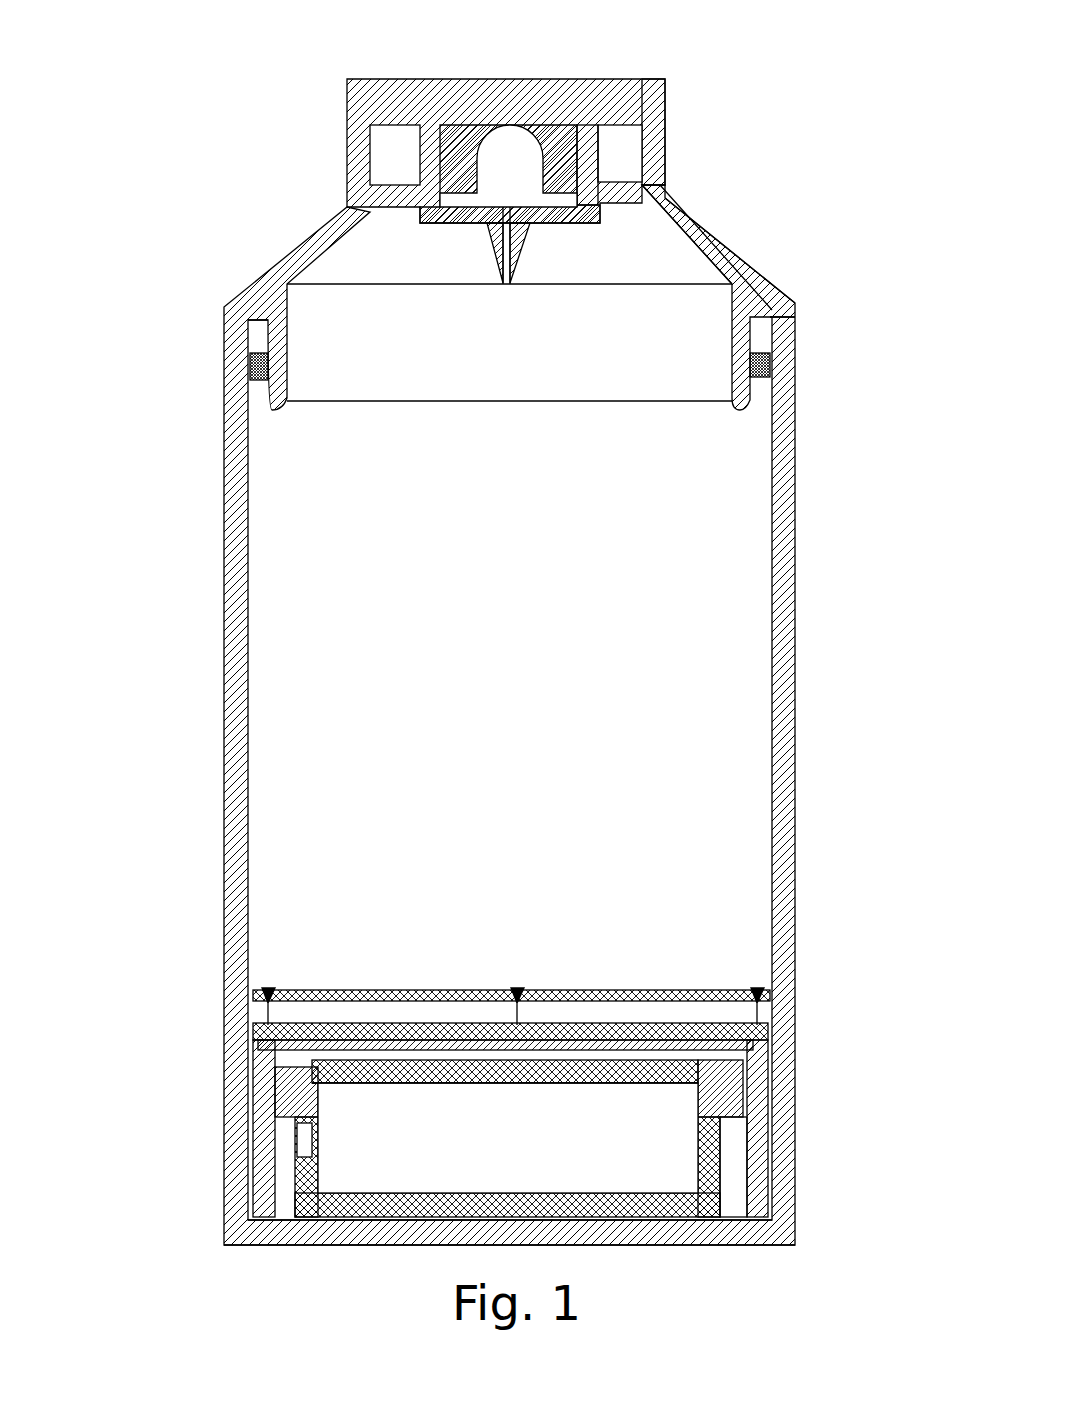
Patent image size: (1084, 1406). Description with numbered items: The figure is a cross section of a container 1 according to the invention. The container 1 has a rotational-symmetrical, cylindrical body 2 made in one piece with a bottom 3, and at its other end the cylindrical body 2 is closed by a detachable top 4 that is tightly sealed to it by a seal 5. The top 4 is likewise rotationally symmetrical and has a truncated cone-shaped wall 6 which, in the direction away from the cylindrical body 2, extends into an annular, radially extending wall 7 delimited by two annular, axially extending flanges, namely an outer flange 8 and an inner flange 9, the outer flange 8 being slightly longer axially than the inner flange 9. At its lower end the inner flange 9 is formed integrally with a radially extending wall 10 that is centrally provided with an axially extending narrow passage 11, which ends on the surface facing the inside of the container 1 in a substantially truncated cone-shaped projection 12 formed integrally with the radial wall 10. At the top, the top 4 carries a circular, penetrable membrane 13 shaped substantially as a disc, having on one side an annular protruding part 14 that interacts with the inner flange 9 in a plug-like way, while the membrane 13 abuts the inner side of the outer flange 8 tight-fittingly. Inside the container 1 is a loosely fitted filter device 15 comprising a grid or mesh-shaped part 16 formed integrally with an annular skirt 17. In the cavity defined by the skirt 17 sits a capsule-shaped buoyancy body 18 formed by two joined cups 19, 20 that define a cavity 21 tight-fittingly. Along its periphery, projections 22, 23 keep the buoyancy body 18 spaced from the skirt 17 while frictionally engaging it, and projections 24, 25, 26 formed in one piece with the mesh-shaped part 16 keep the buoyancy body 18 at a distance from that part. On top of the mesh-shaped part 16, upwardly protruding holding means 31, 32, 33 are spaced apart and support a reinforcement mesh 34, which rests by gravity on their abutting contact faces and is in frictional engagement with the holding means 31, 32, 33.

The container 1 is at (523, 673).
The cylindrical body 2 is at (785, 695).
The bottom 3 is at (728, 1228).
The detachable top 4 is at (752, 272).
The seal 5 is at (752, 365).
The truncated cone-shaped wall 6 is at (705, 238).
The annular, radially extending wall 7 is at (620, 187).
The outer flange 8 is at (645, 120).
The inner flange 9 is at (585, 155).
The radially extending wall 10 is at (510, 199).
The narrow passage 11 is at (502, 273).
The truncated cone-shaped projection 12 is at (493, 238).
The penetrable membrane 13 is at (527, 95).
The annular protruding part 14 is at (457, 167).
The filter device 15 is at (570, 1074).
The grid or mesh-shaped part 16 is at (598, 1032).
The annular skirt 17 is at (750, 1130).
The buoyancy body 18 is at (720, 1188).
The cup 19 is at (388, 1067).
The cup 20 is at (633, 1200).
The cavity 21 is at (680, 1163).
The projection 22 is at (727, 1093).
The projection 23 is at (282, 1095).
The projection 24 is at (315, 1063).
The projection 25 is at (527, 1063).
The projection 26 is at (700, 1058).
The holding means 31 is at (270, 1010).
The holding means 32 is at (517, 1010).
The holding means 33 is at (757, 1012).
The reinforcement mesh 34 is at (328, 1000).